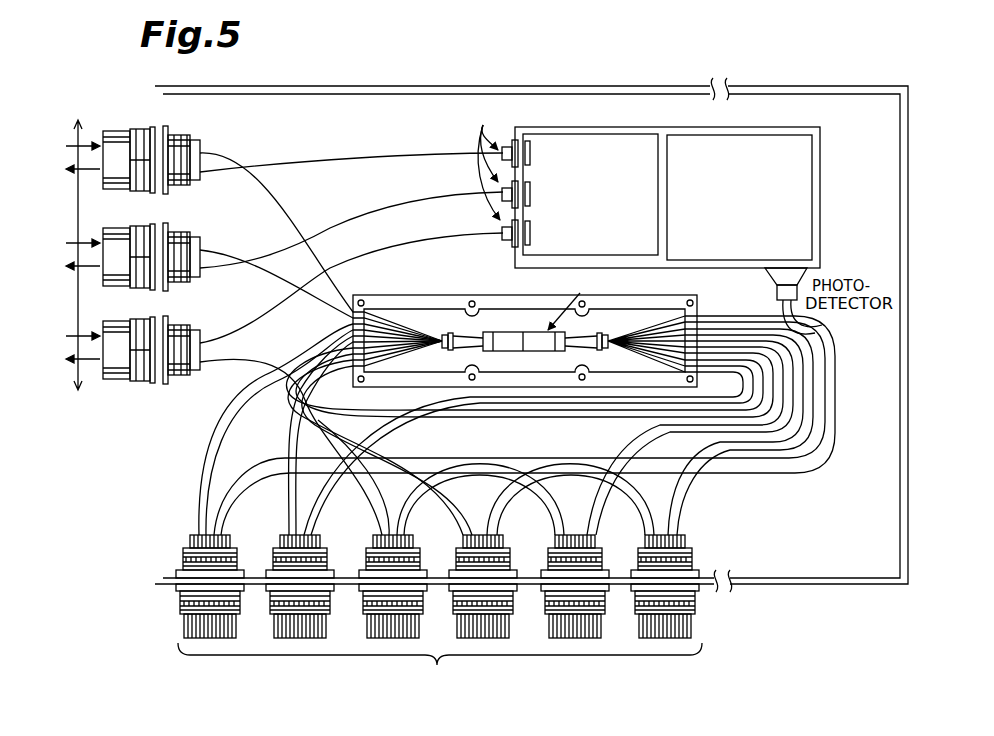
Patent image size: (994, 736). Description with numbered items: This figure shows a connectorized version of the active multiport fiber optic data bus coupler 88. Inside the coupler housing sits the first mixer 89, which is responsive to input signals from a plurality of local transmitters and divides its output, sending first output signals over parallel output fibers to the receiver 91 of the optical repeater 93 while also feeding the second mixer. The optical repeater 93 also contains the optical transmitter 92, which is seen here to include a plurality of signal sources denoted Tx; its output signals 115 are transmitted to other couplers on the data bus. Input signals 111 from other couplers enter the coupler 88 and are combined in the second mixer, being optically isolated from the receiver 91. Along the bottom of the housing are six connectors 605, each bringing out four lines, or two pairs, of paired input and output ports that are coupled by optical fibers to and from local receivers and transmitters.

The active multiport fiber optic data bus coupler 88 is at (378, 127).
The optical repeater 93 is at (645, 187).
The optical transmitter 92 is at (616, 249).
The receiver 91 is at (806, 181).
The first mixer 89 is at (503, 328).
The connectors 605 is at (439, 615).
The input signals 111 is at (120, 274).
The output signals 115 is at (78, 122).